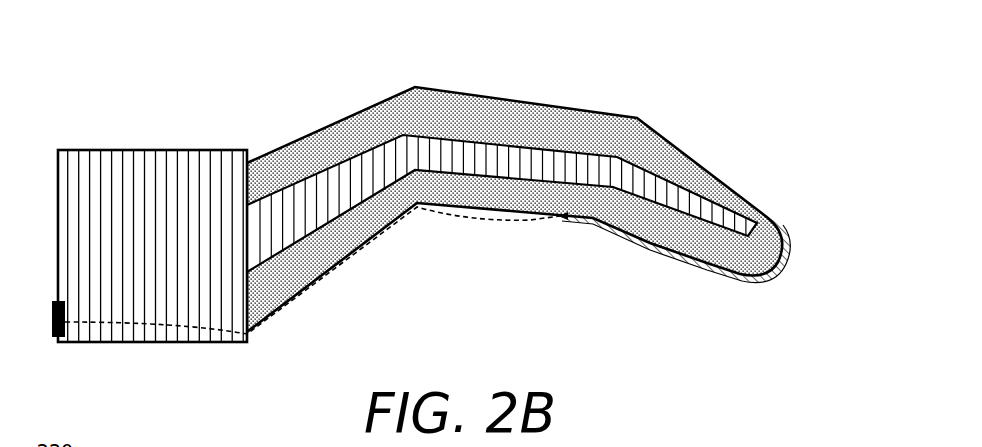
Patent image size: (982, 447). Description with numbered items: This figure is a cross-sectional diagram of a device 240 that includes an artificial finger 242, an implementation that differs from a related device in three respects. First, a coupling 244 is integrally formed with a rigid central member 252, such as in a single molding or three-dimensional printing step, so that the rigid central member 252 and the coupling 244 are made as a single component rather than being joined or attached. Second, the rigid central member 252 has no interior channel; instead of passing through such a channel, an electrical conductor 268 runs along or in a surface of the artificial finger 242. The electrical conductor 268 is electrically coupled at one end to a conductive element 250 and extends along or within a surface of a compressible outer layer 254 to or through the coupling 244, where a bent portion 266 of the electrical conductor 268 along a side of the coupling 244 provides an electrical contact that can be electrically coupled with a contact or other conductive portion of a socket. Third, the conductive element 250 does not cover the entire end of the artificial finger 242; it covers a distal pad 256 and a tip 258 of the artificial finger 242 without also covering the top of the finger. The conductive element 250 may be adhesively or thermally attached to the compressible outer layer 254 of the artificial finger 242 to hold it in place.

The device 240 is at (163, 72).
The artificial finger 242 is at (561, 177).
The coupling 244 is at (185, 152).
The conductive element 250 is at (655, 255).
The rigid central member 252 is at (422, 137).
The compressible outer layer 254 is at (510, 117).
The distal pad 256 is at (680, 267).
The tip 258 is at (789, 236).
The bent portion 266 is at (65, 332).
The electrical conductor 268 is at (342, 270).